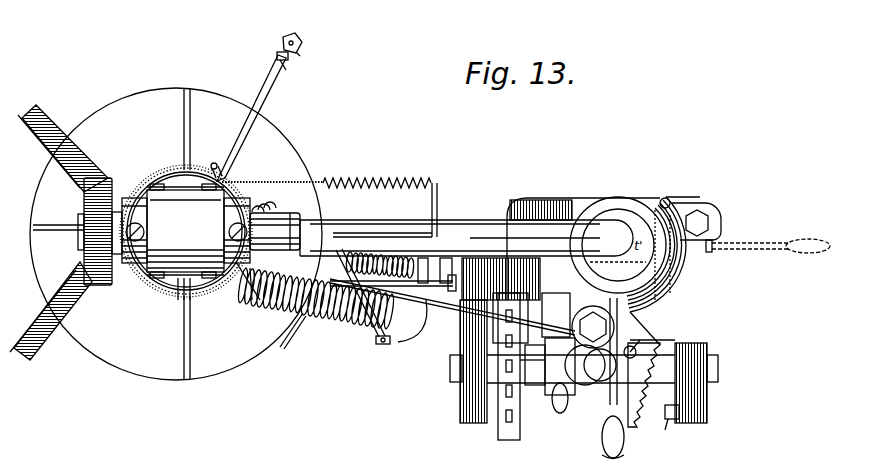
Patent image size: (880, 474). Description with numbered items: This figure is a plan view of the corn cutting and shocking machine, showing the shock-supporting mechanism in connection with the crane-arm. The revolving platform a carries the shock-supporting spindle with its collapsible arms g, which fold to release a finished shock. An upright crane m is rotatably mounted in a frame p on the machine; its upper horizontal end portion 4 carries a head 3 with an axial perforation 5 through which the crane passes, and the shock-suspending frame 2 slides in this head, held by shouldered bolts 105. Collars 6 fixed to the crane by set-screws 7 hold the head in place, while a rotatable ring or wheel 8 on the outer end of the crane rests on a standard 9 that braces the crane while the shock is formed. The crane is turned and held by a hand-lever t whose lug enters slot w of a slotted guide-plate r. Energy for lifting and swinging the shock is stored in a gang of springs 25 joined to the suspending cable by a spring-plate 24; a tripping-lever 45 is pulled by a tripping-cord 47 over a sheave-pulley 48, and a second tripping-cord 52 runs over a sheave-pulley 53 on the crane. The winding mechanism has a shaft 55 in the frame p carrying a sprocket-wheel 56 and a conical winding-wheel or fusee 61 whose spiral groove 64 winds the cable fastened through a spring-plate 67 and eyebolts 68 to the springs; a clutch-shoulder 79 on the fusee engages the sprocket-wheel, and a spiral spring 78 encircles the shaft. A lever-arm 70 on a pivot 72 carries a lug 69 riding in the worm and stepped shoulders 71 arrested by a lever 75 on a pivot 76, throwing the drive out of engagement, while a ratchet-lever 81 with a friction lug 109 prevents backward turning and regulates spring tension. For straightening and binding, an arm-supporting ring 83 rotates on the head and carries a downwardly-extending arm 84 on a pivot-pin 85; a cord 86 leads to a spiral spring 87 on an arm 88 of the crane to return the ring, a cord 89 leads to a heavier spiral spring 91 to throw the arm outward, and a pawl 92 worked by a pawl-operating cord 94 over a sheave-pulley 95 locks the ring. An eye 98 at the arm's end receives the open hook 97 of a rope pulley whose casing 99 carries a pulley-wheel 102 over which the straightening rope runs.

The revolving platform a is at (176, 234).
The collapsible arms g is at (184, 128).
The standard 9 is at (70, 140).
The rotatable ring or wheel 8 is at (98, 231).
The upper horizontal end portion 4 is at (78, 222).
The collars 6 is at (186, 230).
The head 3 is at (185, 231).
The set-screws 7 is at (146, 238).
The shock-suspending frame 2 is at (168, 191).
The cord 89 is at (158, 176).
The shouldered bolts 105 is at (168, 166).
The arm-supporting ring 83 is at (162, 298).
The tripping-lever 45 is at (186, 300).
The pivot-pin 85 is at (214, 164).
The sheave-pulley 95 is at (275, 231).
The upright crane m is at (466, 238).
The spiral spring 87 is at (380, 180).
The arm 88 is at (372, 232).
The cord 86 is at (272, 180).
The downwardly-extending arm 84 is at (240, 130).
The open hook 97 is at (277, 54).
The casing 99 is at (294, 36).
The pulley-wheel 102 is at (302, 52).
The eye 98 is at (287, 68).
The springs 25 is at (284, 212).
The spring-plate 24 is at (280, 312).
The pawl 92 is at (232, 290).
The pawl-operating cord 94 is at (252, 300).
The tripping-cord 47 is at (302, 340).
The sheave-pulley 48 is at (338, 248).
The spiral spring 91 is at (376, 342).
The tripping-cord 52 is at (423, 258).
The sheave-pulley 53 is at (446, 258).
The spring-plate 67 is at (418, 305).
The eyebolts 68 is at (405, 340).
The axial perforation 5 is at (564, 248).
The slotted guide-plate r is at (663, 271).
The pivot 72 is at (670, 201).
The slot w is at (716, 248).
The frame p is at (460, 410).
The shaft 55 is at (450, 364).
The sprocket-wheel 56 is at (498, 420).
The friction lever or lug 109 is at (518, 300).
The ratchet-lever 81 is at (556, 310).
The clutch-shoulder 79 is at (520, 375).
The conical winding-wheel or fusee 61 is at (556, 412).
The spiral groove 64 is at (582, 388).
The hand-lever t is at (608, 392).
The lever-arm 70 is at (620, 455).
The stepped shoulders 71 is at (645, 412).
The lug 69 is at (632, 358).
The spiral spring 78 is at (650, 334).
The lever 75 is at (680, 412).
The pivot 76 is at (668, 426).